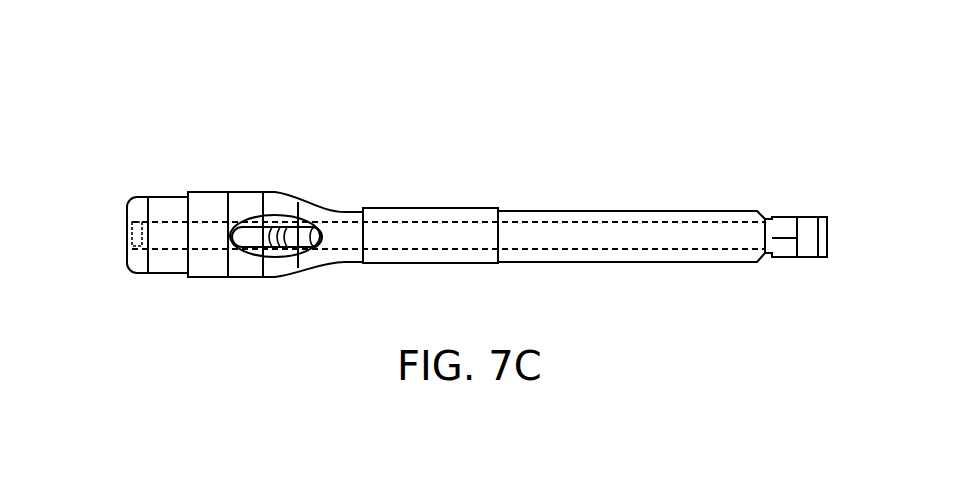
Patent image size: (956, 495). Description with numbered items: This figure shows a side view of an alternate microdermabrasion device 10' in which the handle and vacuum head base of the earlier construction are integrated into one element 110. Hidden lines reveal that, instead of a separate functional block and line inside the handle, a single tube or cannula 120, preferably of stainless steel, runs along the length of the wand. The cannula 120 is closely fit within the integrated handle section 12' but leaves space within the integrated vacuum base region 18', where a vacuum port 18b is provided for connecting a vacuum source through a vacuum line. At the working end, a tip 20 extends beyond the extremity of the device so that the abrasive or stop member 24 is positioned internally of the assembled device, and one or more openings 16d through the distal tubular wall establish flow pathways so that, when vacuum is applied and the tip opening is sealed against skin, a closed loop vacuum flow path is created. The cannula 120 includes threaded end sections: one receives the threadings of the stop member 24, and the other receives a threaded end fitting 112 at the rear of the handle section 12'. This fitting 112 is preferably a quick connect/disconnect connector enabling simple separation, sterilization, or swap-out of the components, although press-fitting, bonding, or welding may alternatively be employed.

The microdermabrasion device 10' is at (440, 210).
The integrated handle section 12' is at (631, 283).
The openings 16d is at (157, 224).
The integrated vacuum base region 18' is at (273, 190).
The vacuum port 18b is at (322, 237).
The tip 20 is at (158, 273).
The abrasive member 24 is at (124, 243).
The integrated handle and vacuum head base element 110 is at (348, 262).
The threaded end fitting 112 is at (798, 217).
The tube or cannula 120 is at (628, 222).